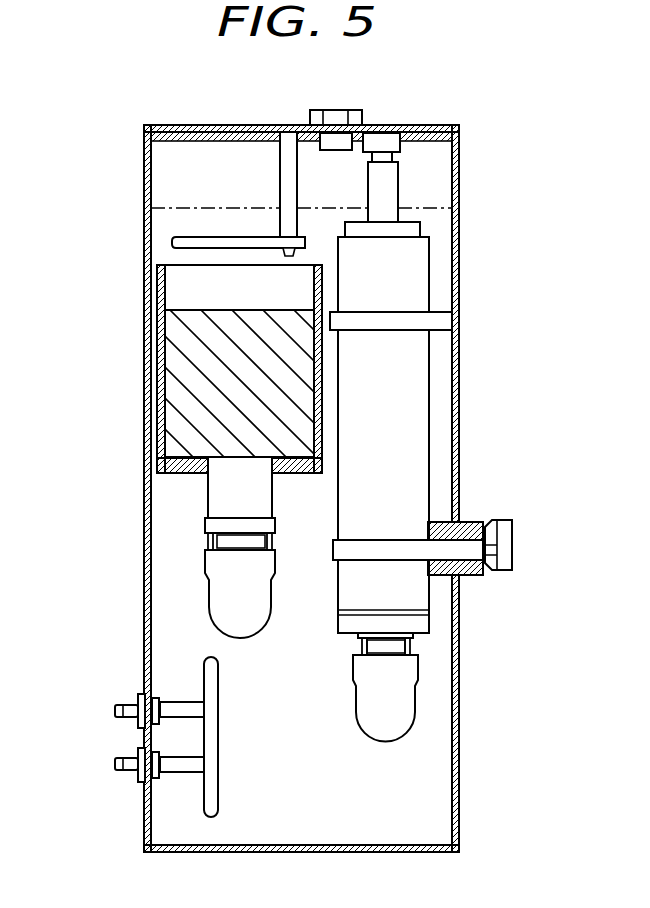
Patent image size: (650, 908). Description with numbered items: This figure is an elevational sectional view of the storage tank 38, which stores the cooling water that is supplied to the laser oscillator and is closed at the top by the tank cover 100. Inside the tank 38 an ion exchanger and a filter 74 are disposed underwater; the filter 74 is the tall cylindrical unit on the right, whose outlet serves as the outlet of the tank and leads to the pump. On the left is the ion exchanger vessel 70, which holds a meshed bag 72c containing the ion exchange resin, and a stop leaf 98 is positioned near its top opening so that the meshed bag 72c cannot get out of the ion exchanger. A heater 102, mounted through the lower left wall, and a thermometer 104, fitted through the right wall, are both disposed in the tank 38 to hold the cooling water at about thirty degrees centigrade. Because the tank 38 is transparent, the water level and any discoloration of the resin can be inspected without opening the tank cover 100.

The storage tank 38 is at (460, 215).
The tank cover 100 is at (212, 126).
The stop leaf 98 is at (173, 239).
The container 70 is at (184, 409).
The meshed bag 72c is at (177, 352).
The filter 74 is at (423, 413).
The thermometer 104 is at (385, 548).
The heater 102 is at (210, 672).